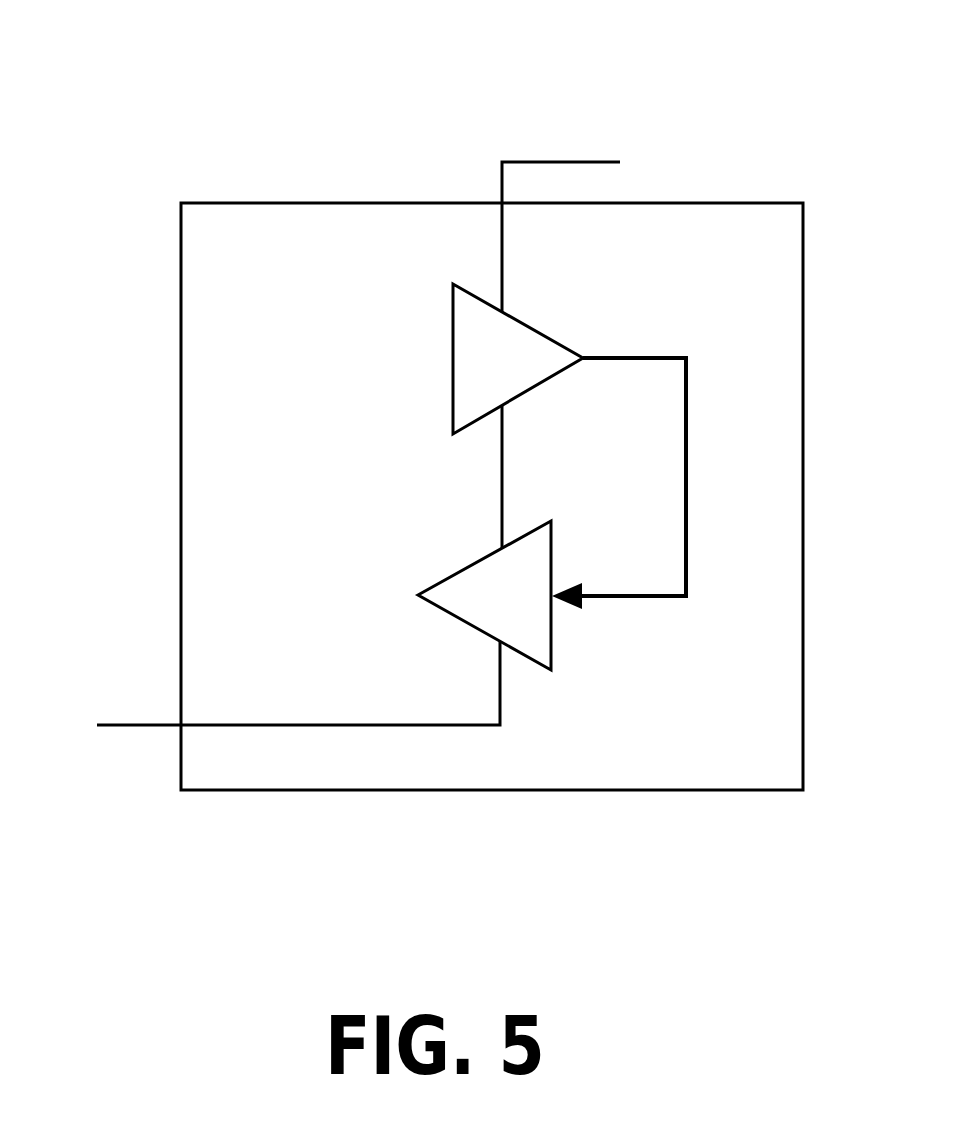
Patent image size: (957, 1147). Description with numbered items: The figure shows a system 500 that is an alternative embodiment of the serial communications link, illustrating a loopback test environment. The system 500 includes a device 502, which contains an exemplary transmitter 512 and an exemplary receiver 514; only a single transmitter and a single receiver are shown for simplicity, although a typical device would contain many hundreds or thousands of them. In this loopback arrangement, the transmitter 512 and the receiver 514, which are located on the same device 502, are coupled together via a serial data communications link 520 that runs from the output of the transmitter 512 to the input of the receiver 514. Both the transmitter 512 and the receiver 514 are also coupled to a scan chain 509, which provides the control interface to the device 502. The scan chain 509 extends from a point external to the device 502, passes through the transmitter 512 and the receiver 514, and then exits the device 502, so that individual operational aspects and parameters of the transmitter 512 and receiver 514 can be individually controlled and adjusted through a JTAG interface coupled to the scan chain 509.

The system 500 is at (162, 45).
The device 502 is at (270, 257).
The scan chain 509 is at (573, 162).
The transmitter 512 is at (527, 318).
The receiver 514 is at (462, 562).
The serial data communications link 520 is at (688, 412).